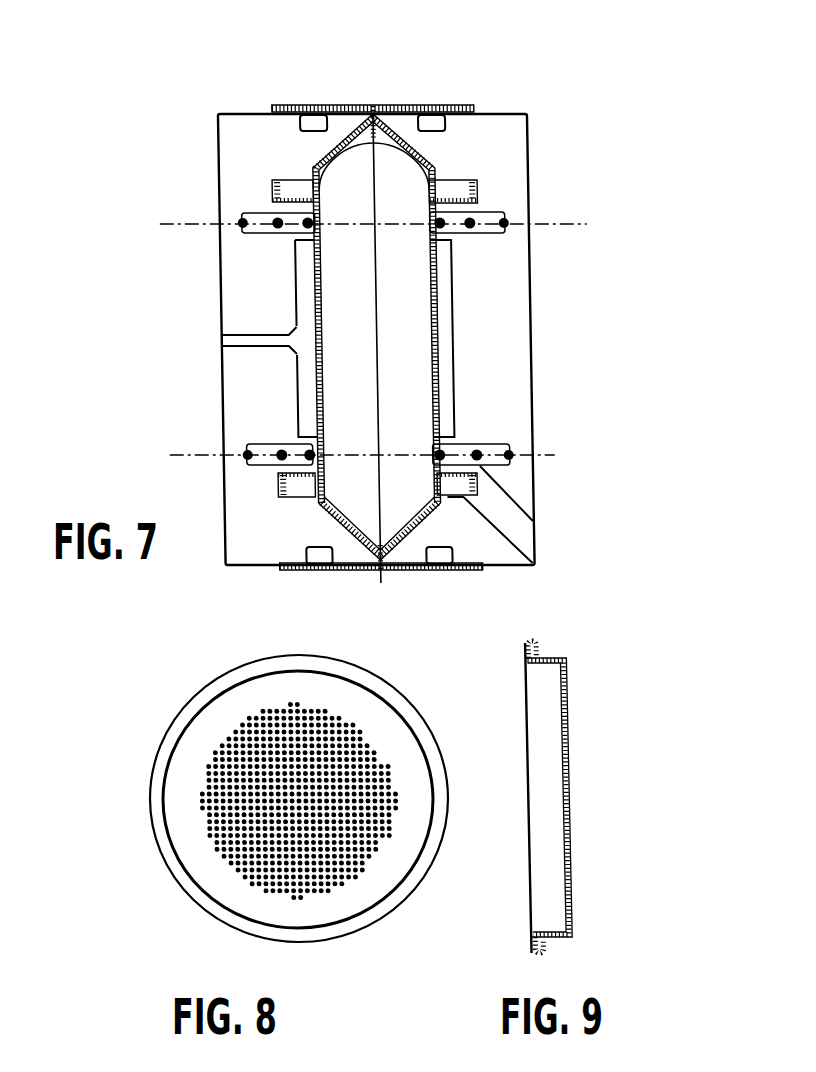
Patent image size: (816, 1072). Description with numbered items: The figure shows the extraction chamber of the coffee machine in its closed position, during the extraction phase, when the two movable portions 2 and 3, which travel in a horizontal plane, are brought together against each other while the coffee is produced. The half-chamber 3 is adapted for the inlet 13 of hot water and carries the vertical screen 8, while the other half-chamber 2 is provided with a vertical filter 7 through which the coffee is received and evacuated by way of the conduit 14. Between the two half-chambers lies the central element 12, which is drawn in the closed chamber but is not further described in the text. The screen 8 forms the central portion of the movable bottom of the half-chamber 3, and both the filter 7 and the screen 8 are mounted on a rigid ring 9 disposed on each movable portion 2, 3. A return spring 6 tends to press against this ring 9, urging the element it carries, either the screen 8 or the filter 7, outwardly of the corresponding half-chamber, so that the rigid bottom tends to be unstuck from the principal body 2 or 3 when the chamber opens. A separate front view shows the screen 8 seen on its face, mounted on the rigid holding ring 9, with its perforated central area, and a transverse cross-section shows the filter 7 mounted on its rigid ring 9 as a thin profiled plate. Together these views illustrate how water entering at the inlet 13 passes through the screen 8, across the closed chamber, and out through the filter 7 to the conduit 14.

In FIG. 7, the movable portion 2 is at (480, 152).
In FIG. 7, the movable portion 3 is at (245, 135).
In FIG. 7, the return spring 6 is at (503, 215).
In FIG. 9, the filter 7 is at (563, 775).
In FIG. 8, the screen 8 is at (198, 748).
In FIG. 7, the rigid ring 9 is at (271, 202).
In FIG. 8, the rigid ring 9 is at (350, 681).
In FIG. 9, the rigid ring 9 is at (550, 660).
In FIG. 7, the inner tube 12 is at (382, 187).
In FIG. 7, the inlet 13 is at (218, 337).
In FIG. 7, the conduit 14 is at (498, 518).